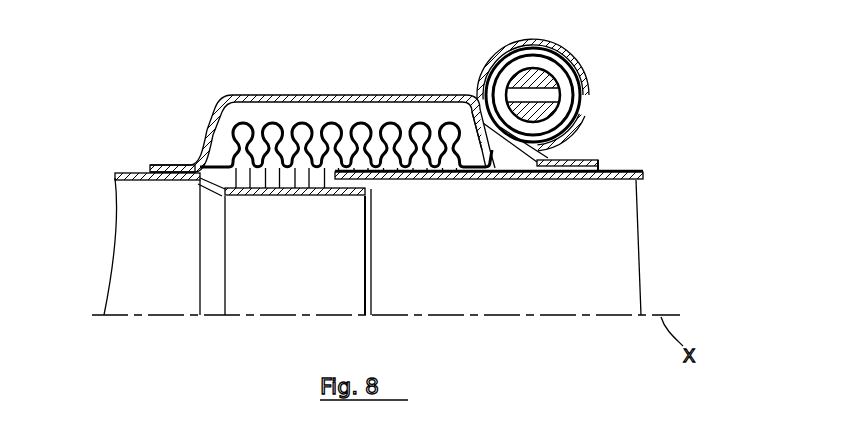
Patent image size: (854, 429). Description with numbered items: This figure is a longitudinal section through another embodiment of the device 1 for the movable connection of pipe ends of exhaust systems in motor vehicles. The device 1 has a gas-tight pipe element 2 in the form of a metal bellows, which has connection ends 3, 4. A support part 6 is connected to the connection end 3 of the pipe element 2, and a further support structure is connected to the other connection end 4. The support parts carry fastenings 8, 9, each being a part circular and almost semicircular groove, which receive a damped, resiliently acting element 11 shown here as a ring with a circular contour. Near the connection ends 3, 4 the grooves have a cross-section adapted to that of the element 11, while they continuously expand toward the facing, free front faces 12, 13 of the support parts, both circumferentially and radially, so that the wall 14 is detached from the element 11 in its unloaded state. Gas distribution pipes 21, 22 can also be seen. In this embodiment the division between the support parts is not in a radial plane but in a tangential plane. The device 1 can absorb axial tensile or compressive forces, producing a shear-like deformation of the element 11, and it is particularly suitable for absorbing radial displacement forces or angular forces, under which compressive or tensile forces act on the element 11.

The device 1 is at (138, 337).
The pipe element 2 is at (342, 115).
The connection end 3 is at (160, 174).
The connection end 4 is at (645, 172).
The support part 6 is at (302, 93).
The fastening 8 is at (580, 64).
The fastening 9 is at (490, 118).
The damped, resiliently acting element 11 is at (555, 127).
The front face 12 is at (590, 93).
The front face 13 is at (588, 101).
The wall 14 is at (590, 108).
The gas distribution pipe 21 is at (198, 177).
The gas distribution pipe 22 is at (598, 178).